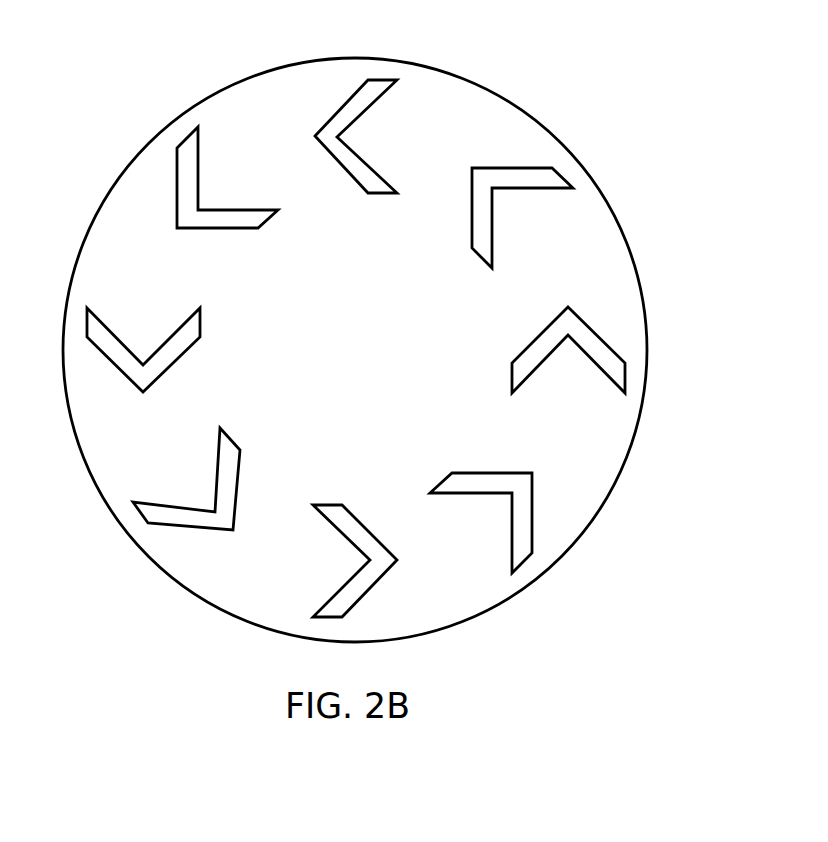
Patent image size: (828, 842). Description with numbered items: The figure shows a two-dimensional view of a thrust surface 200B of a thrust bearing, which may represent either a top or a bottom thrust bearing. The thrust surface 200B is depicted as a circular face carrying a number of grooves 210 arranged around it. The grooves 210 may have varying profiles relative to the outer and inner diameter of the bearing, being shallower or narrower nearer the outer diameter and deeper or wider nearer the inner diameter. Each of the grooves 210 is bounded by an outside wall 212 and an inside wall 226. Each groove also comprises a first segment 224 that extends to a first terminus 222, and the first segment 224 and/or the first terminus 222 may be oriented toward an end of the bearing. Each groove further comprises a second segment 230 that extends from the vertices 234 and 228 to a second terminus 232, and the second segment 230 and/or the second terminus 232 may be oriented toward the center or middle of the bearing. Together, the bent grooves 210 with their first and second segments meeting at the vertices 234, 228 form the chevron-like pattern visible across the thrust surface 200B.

The thrust surface 200B is at (112, 160).
The grooves 210 is at (512, 365).
The outside wall 212 is at (337, 164).
The first terminus 222 is at (367, 80).
The first segment 224 is at (537, 177).
The inside wall 226 is at (338, 530).
The vertex 228 is at (368, 562).
The second segment 230 is at (483, 237).
The second terminus 232 is at (463, 492).
The vertex 234 is at (313, 136).